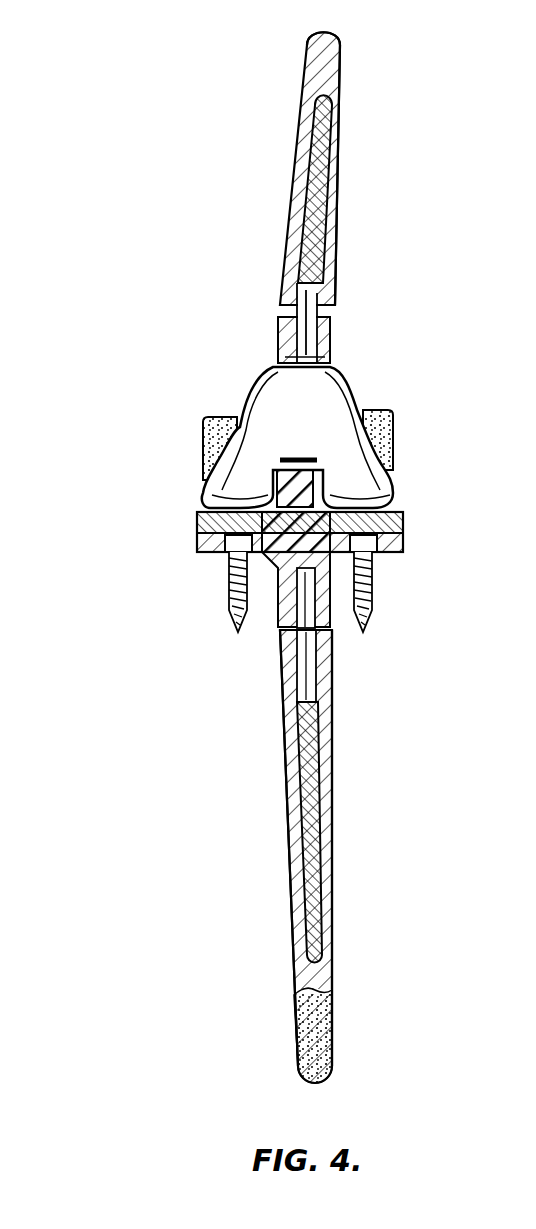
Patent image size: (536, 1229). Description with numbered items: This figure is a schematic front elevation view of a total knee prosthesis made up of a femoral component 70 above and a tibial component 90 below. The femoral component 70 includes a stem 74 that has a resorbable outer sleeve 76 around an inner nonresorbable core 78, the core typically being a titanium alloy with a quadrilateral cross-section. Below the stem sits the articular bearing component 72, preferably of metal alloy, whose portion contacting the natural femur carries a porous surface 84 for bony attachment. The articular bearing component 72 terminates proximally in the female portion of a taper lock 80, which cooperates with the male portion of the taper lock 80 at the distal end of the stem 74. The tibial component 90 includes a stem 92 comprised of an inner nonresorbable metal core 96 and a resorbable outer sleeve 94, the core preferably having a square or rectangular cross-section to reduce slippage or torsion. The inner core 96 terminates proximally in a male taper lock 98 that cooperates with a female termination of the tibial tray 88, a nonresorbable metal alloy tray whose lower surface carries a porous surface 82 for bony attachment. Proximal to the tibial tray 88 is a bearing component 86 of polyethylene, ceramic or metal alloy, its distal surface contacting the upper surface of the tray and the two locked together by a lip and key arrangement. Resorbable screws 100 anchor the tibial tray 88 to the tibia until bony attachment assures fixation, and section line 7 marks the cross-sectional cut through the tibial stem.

The femoral component 70 is at (128, 224).
The articular bearing component 72 is at (305, 425).
The stem 74 is at (300, 127).
The resorbable outer sleeve 76 is at (300, 183).
The inner nonresorbable core 78 is at (313, 232).
The taper lock 80 is at (303, 315).
The porous surface 82 is at (393, 556).
The porous surface 84 is at (393, 440).
The bearing component 86 is at (393, 511).
The tibial tray 88 is at (393, 547).
The tibial component 90 is at (128, 797).
The stem 92 is at (330, 957).
The resorbable outer sleeve 94 is at (330, 893).
The inner nonresorbable core 96 is at (307, 752).
The taper lock 98 is at (307, 627).
The resorbable screws 100 is at (230, 603).
The section line 7- 7 is at (369, 819).